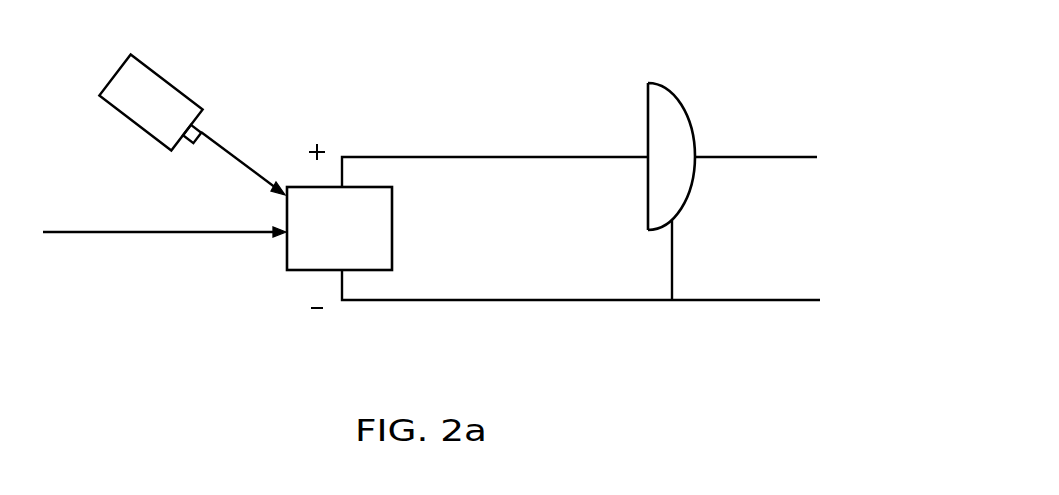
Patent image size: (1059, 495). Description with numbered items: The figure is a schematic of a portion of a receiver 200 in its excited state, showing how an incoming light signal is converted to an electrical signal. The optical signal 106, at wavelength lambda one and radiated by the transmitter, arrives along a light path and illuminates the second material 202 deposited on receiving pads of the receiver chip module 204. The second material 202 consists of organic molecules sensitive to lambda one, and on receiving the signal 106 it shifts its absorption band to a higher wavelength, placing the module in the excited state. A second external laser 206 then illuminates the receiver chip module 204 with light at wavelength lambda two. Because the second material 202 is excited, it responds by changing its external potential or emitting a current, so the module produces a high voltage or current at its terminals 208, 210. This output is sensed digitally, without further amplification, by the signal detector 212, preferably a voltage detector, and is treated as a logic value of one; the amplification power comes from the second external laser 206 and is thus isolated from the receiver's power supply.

The receiver 200 is at (823, 76).
The optical signal 106 is at (143, 232).
The second external laser 206 is at (155, 73).
The second material 202 is at (286, 248).
The receiver chip module 204 is at (360, 240).
The terminal 208 is at (467, 157).
The terminal 210 is at (460, 300).
The signal detector 212 is at (690, 118).